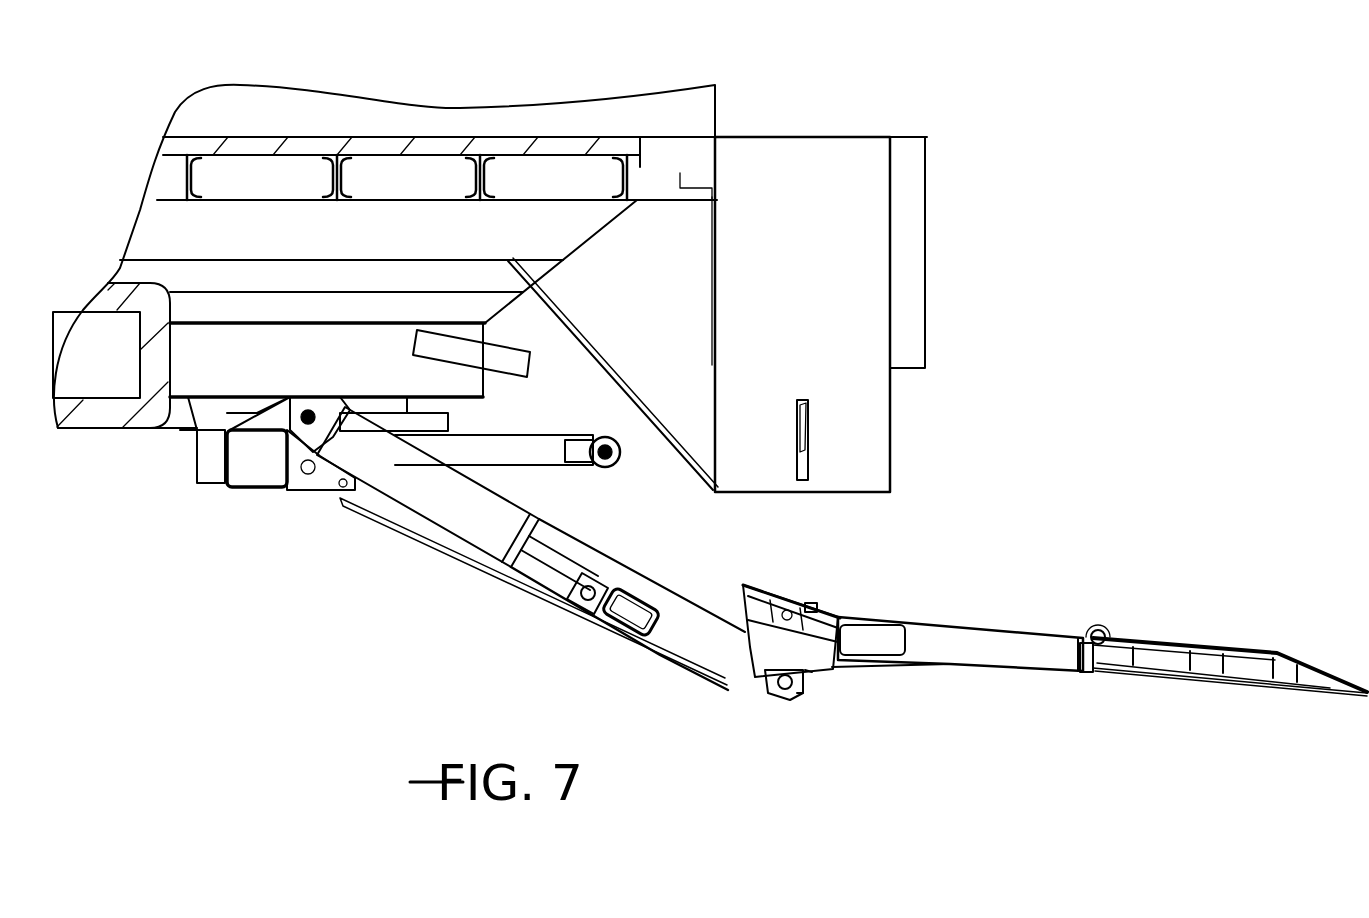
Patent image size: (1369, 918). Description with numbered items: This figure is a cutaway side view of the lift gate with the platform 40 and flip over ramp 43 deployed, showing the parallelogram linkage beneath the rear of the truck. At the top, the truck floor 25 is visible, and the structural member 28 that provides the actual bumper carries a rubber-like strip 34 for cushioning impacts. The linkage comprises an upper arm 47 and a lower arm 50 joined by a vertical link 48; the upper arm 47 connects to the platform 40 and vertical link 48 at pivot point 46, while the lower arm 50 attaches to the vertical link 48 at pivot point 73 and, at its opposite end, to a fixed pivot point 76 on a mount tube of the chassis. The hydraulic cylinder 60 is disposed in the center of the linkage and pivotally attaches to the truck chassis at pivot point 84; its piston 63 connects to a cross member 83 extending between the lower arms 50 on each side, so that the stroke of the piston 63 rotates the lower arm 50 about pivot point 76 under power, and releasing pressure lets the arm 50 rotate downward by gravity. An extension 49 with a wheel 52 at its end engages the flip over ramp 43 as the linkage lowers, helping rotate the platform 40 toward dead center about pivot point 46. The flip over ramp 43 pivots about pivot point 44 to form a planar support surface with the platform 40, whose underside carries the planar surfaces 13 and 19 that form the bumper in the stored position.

The floor 25 is at (500, 145).
The structural members 28 is at (797, 168).
The rubber-like strips 34 is at (908, 195).
The extension 49 is at (513, 447).
The wheel 52 is at (620, 462).
The pivot point 84 is at (262, 490).
The fixed pivot point 76 is at (308, 475).
The hydraulic cylinder 60 is at (403, 480).
The piston 63 is at (547, 562).
The lower arm 50 is at (693, 638).
The upper arm 47 is at (607, 563).
The cross member 83 is at (587, 620).
The planar surface 13 is at (723, 677).
The pivot point 46 is at (820, 607).
The pivot point 73 is at (778, 693).
The planar surface 19 is at (815, 673).
The vertical link 48 is at (802, 673).
The platform 40 is at (935, 635).
The pivot point 44 is at (1105, 630).
The flip over ramp 43 is at (1240, 667).